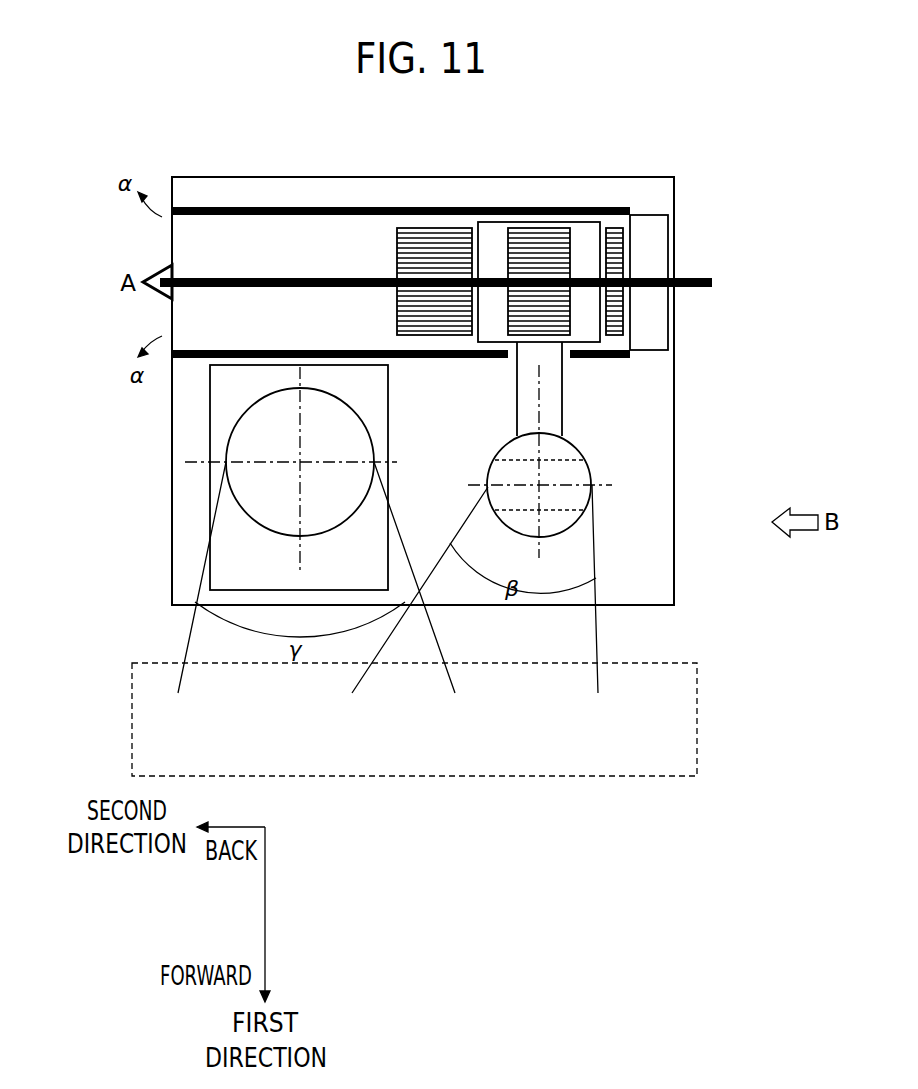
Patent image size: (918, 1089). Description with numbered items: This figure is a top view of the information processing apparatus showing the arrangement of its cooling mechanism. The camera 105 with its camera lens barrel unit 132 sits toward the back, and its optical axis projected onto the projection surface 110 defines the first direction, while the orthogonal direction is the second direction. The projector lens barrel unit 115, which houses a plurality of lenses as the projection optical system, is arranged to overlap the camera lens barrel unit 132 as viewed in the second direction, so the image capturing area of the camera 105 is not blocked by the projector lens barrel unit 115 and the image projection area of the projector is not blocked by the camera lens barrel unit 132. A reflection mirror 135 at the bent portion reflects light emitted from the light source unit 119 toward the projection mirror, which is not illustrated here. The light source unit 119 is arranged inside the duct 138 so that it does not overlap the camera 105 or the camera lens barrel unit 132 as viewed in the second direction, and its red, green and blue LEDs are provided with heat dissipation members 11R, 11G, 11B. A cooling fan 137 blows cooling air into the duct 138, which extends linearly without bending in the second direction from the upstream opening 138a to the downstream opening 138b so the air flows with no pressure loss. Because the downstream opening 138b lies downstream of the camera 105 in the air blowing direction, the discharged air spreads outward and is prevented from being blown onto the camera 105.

The heat dissipation member 11G is at (438, 245).
The heat dissipation member 11R is at (543, 245).
The heat dissipation member 11B is at (617, 245).
The light source unit 119 is at (492, 237).
The duct 138 is at (576, 206).
The upstream opening 138a is at (633, 210).
The downstream opening 138b is at (173, 205).
The cooling fan 137 is at (648, 246).
The camera 105 is at (218, 410).
The camera lens barrel unit 132 is at (235, 448).
The projector lens barrel unit 115 is at (565, 443).
The reflection mirror 135 is at (578, 472).
The projection surface 110 is at (697, 722).